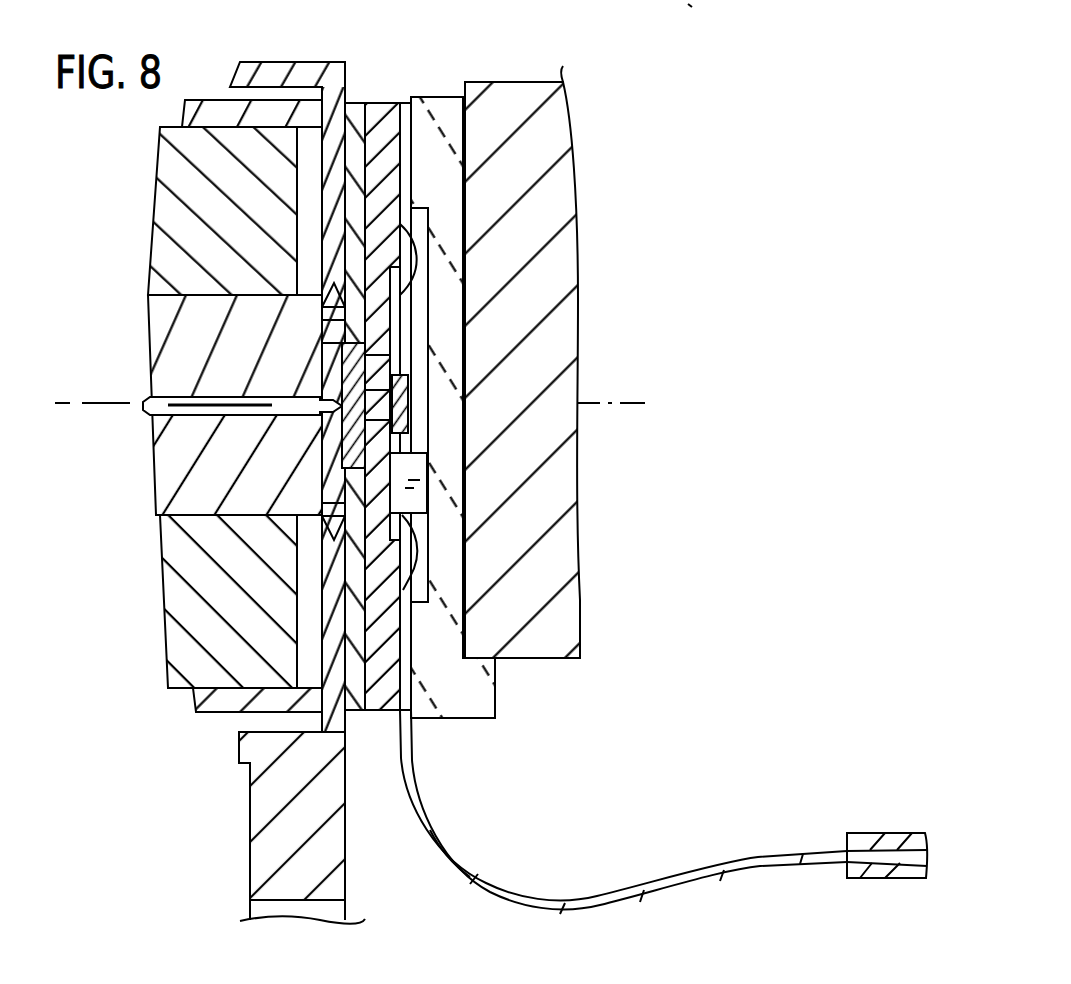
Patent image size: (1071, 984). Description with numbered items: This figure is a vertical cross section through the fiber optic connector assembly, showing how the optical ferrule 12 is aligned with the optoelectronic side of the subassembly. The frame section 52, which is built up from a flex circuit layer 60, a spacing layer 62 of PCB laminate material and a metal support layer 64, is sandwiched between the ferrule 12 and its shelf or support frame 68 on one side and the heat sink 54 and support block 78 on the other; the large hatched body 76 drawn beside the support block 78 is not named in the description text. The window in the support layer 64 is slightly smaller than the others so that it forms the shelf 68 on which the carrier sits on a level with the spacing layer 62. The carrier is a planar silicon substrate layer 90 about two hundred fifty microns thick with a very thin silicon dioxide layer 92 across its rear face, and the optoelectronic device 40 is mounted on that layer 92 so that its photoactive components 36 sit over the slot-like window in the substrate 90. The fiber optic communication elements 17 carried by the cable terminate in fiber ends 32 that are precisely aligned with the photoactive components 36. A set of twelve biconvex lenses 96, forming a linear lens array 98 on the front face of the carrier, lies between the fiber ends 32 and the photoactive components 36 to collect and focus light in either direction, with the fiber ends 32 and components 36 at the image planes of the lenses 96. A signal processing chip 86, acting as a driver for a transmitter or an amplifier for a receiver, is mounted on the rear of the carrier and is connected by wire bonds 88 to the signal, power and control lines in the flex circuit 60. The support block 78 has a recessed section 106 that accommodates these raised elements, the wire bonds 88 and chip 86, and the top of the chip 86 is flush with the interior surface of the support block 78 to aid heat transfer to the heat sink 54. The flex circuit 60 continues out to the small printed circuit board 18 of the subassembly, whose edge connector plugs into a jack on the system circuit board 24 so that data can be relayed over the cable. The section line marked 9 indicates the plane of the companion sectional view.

The section line 9- 9 is at (42, 428).
The optical ferrule 12 is at (142, 660).
The fiber optic communication elements 17 is at (162, 418).
The printed circuit board 18 is at (877, 833).
The circuit board 24 is at (701, 6).
The fiber ends 32 is at (340, 426).
The photoactive components 36 is at (408, 408).
The optoelectronic device 40 is at (400, 394).
The frame section 52 is at (456, 772).
The heat sink 54 is at (538, 704).
The flex circuit layer 60 is at (405, 103).
The spacing layer 62 is at (385, 103).
The support layer 64 is at (357, 103).
The shelf 68 is at (250, 822).
The support block 76 is at (566, 213).
The support block 78 is at (440, 97).
The signal processing chip 86 is at (430, 498).
The wire bonds 88 is at (395, 292).
The silicon substrate layer 90 is at (343, 309).
The silicon dioxide layer 92 is at (345, 344).
The lenses 96 is at (345, 397).
The lens array 98 is at (342, 456).
The recessed section 106 is at (428, 228).